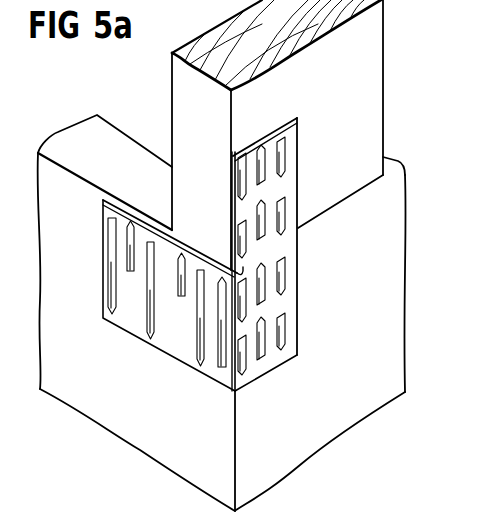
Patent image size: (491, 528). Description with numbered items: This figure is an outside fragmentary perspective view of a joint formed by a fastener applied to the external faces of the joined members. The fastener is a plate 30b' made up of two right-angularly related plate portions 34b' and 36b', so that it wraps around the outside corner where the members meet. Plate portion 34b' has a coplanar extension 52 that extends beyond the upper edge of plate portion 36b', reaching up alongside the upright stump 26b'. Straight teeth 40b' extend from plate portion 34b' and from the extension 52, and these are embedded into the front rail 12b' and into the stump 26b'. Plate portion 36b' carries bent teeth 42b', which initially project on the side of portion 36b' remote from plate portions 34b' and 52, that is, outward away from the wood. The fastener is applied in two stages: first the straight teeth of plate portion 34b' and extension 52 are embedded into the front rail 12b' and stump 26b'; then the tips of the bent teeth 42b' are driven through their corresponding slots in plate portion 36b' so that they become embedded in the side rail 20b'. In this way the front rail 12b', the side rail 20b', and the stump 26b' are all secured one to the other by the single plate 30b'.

The stump 26b' is at (258, 135).
The coplanar extension 52 is at (298, 152).
The straight teeth 40b' is at (292, 256).
The plate portion 34b' is at (292, 254).
The bent teeth 42b' is at (155, 292).
The plate portion 36b' is at (173, 303).
The side rail 20b' is at (136, 313).
The plate 30b' is at (276, 451).
The front rail 12b' is at (321, 333).